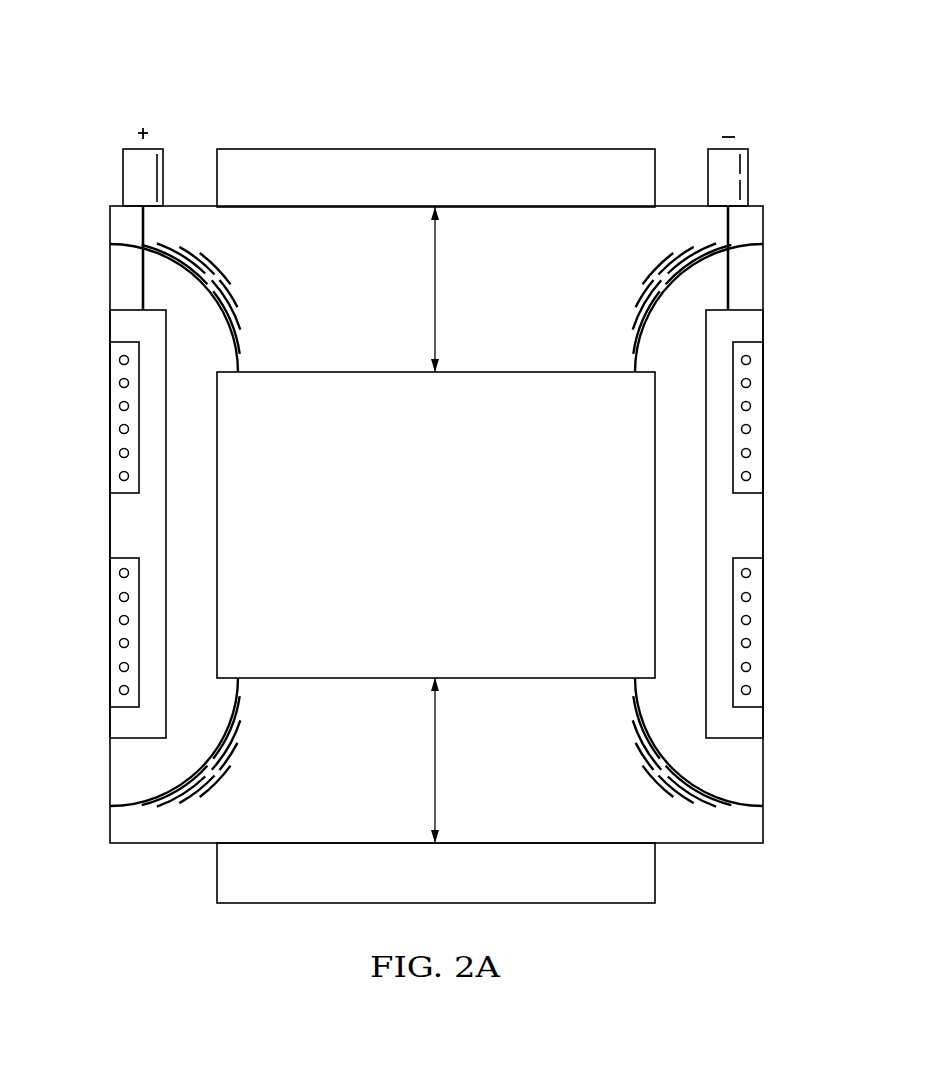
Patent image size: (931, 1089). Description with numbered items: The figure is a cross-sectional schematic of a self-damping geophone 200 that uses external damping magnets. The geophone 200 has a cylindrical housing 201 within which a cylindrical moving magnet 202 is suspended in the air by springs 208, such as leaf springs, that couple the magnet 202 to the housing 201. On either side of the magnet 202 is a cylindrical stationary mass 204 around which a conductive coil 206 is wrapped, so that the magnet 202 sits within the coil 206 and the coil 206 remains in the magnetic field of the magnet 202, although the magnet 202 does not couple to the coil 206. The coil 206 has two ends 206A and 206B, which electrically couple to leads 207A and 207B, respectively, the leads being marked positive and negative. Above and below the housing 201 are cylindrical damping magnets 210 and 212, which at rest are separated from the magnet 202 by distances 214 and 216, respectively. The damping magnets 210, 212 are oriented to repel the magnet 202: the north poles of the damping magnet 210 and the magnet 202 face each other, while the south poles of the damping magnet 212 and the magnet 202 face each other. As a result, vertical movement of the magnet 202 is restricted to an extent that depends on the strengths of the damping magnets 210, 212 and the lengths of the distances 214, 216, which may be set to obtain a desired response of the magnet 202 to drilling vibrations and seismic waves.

The self-damping geophone 200 is at (89, 58).
The cylindrical housing 201 is at (160, 847).
The cylindrical moving magnet 202 is at (456, 538).
The cylindrical stationary mass 204 is at (118, 523).
The conductive coil 206 is at (121, 428).
The coil end 206A is at (141, 280).
The coil end 206B is at (733, 280).
The lead 207A is at (132, 177).
The lead 207B is at (738, 177).
The springs 208 is at (218, 270).
The damping magnet 210 is at (543, 157).
The damping magnet 212 is at (553, 895).
The distance 214 is at (437, 291).
The distance 216 is at (437, 760).